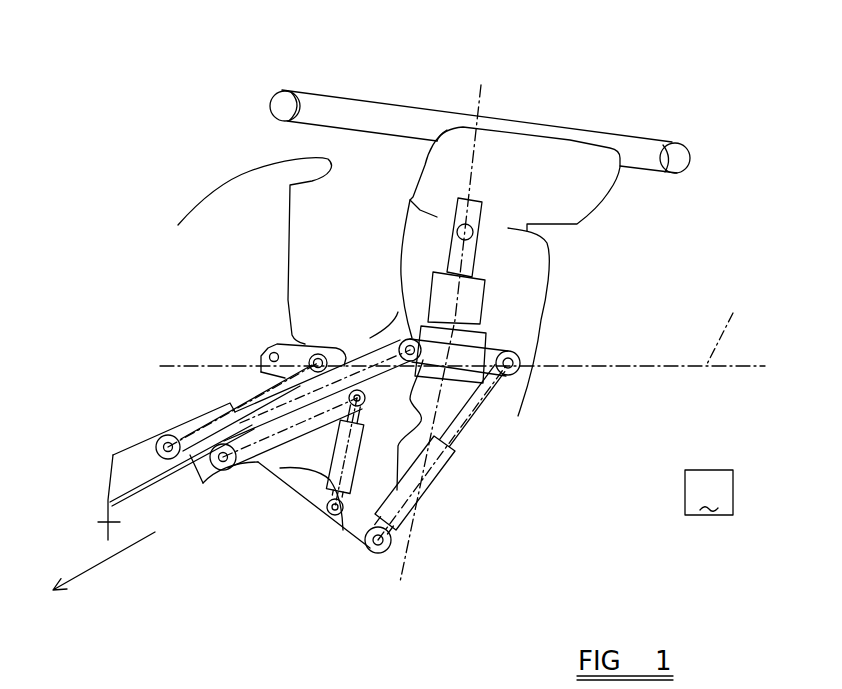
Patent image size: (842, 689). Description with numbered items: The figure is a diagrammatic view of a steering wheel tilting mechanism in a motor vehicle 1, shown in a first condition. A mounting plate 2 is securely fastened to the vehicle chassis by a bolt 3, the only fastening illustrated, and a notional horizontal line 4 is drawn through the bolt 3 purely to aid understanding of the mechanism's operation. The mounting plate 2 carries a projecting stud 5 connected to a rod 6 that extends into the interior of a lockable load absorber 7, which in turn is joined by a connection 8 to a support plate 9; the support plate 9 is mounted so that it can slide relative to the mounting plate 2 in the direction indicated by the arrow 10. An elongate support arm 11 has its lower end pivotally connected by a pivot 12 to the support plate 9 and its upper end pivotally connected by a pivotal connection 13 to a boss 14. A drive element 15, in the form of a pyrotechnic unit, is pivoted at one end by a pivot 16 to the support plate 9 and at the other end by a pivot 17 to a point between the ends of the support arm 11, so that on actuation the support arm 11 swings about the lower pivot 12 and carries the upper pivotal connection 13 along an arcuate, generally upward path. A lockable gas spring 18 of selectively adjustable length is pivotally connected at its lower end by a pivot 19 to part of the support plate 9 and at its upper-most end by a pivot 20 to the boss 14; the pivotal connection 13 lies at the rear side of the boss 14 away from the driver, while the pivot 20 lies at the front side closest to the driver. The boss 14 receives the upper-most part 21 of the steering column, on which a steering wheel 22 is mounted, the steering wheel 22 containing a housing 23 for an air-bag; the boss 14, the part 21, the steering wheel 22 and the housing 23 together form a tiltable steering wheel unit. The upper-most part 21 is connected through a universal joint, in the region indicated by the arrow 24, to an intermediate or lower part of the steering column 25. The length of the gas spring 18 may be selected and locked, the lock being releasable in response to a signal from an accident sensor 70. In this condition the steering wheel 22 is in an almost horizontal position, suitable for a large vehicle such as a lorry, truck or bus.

The motor vehicle 1 is at (238, 230).
The mounting plate 2 is at (135, 460).
The bolt 3 is at (272, 348).
The notional horizontal line 4 is at (735, 312).
The projecting stud 5 is at (162, 436).
The rod 6 is at (200, 430).
The lockable load absorber 7 is at (238, 405).
The connection 8 is at (316, 338).
The support plate 9 is at (280, 468).
The arrow 10 is at (98, 567).
The elongate support arm 11 is at (240, 470).
The pivot 12 is at (205, 483).
The pivotal connection 13 is at (405, 337).
The boss 14 is at (508, 228).
The drive element 15 is at (318, 472).
The pivot 16 is at (343, 530).
The pivot 17 is at (372, 325).
The lockable gas spring 18 is at (445, 465).
The pivot 19 is at (380, 556).
The pivot 20 is at (540, 362).
The upper-most part of the steering column 21 is at (485, 308).
The steering wheel 22 is at (655, 148).
The housing 23 is at (610, 193).
The arrow 24 is at (470, 384).
The intermediate or lower part of the steering column 25 is at (410, 553).
The accident sensor 70 is at (450, 458).